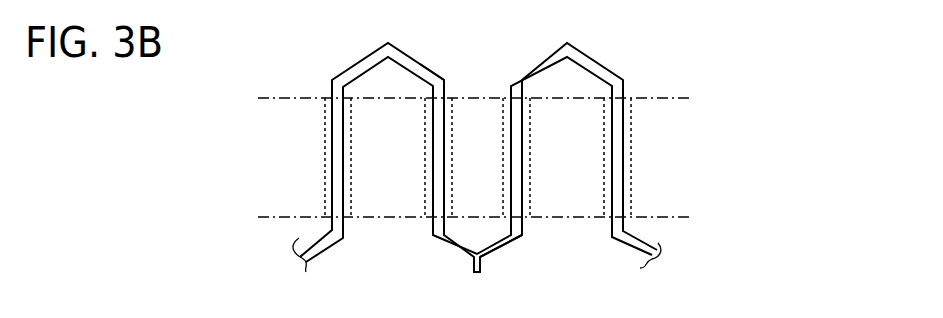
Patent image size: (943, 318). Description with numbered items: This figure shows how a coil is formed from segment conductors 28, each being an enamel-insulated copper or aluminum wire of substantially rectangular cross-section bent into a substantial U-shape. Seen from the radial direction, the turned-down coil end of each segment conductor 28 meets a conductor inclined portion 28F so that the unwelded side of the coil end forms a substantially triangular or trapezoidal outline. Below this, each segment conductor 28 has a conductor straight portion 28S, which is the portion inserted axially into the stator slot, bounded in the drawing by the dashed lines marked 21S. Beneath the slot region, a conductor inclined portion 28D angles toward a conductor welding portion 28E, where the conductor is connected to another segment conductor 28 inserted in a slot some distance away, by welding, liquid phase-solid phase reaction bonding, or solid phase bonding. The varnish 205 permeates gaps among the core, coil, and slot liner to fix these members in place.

The segment conductor 28 is at (413, 58).
The conductor inclined portion of the unwelded side of the coil end 28F is at (428, 69).
The conductor straight portion 28S is at (512, 168).
The conductor inclined portion 28D is at (508, 243).
The conductor welding portion 28E is at (481, 271).
The side surface 21S is at (324, 135).
The varnish 205 is at (627, 167).